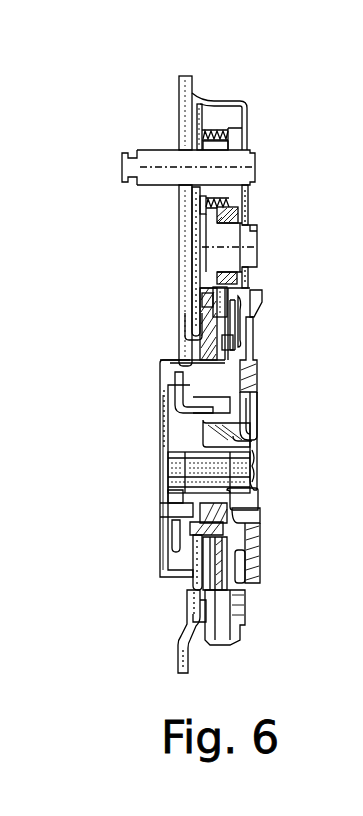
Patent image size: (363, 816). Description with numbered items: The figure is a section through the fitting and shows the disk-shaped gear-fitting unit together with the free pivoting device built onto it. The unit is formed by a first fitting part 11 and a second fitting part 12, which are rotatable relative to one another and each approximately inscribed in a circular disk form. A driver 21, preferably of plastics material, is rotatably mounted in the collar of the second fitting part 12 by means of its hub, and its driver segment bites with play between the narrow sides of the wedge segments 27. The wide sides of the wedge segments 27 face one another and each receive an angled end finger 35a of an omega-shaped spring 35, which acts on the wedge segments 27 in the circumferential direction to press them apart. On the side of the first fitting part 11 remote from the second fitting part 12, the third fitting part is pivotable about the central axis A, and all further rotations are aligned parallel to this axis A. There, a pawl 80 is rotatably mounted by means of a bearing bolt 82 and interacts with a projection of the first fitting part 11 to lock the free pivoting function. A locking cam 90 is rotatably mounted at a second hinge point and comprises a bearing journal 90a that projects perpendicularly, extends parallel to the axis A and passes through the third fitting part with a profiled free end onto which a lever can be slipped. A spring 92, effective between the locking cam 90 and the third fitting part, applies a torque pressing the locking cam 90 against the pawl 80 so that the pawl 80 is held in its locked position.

The locking cam 90 is at (236, 146).
The bearing journal 90a is at (162, 163).
The spring 92 is at (207, 131).
The pawl 80 is at (248, 214).
The bearing bolt 82 is at (234, 240).
The first fitting part 11 is at (183, 343).
The omega-shaped spring 35 is at (160, 395).
The angled end finger 35a is at (162, 416).
The driver 21 is at (162, 450).
The second fitting part 12 is at (258, 380).
The wedge segments 27 is at (258, 413).
The central axis A is at (260, 472).